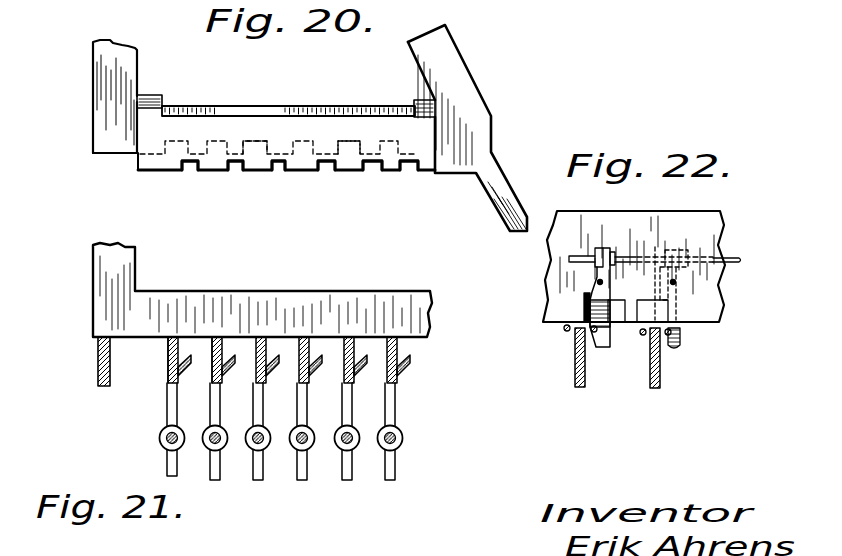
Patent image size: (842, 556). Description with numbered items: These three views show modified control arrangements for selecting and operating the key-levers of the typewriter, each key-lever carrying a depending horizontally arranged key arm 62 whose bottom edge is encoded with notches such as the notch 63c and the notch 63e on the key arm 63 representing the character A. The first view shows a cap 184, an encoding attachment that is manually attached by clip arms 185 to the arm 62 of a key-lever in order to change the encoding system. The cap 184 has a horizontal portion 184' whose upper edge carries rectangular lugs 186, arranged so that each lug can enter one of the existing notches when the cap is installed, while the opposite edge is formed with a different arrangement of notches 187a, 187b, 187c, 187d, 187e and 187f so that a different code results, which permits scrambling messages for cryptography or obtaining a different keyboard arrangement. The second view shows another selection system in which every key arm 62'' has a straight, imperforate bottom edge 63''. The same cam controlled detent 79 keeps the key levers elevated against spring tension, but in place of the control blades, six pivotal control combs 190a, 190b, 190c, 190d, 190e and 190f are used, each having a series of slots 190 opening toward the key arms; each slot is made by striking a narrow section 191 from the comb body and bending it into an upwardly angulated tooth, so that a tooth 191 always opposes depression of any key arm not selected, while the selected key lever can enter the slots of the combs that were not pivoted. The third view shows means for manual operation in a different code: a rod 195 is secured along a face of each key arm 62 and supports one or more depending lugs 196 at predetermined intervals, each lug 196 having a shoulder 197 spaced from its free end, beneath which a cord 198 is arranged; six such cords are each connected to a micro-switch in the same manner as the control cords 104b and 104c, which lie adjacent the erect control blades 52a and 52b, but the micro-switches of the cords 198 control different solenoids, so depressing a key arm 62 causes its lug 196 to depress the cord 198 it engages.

In FIG. 20, the key arm 62 is at (288, 105).
In FIG. 22, the key arm 62 is at (634, 254).
In FIG. 20, the key arm 63 is at (467, 128).
In FIG. 20, the notch 63c is at (262, 141).
In FIG. 20, the notch 63e is at (348, 141).
In FIG. 20, the cap 184 is at (286, 200).
In FIG. 20, the horizontal portion 184' is at (277, 121).
In FIG. 20, the clip arms 185 is at (164, 98).
In FIG. 20, the rectangular lugs 186 is at (212, 140).
In FIG. 20, the notch 187a is at (192, 172).
In FIG. 20, the notch 187b is at (237, 173).
In FIG. 20, the notch 187c is at (287, 173).
In FIG. 20, the notch 187d is at (330, 173).
In FIG. 20, the notch 187e is at (374, 174).
In FIG. 20, the notch 187f is at (411, 174).
In FIG. 21, the key arm 62'' is at (262, 290).
In FIG. 21, the bottom edge 63'' is at (139, 365).
In FIG. 21, the detent 79 is at (97, 365).
In FIG. 21, the slots 190 is at (213, 350).
In FIG. 21, the pivotal control comb 190a is at (167, 415).
In FIG. 21, the pivotal control comb 190b is at (220, 415).
In FIG. 21, the pivotal control comb 190c is at (261, 418).
In FIG. 21, the pivotal control comb 190d is at (305, 417).
In FIG. 21, the pivotal control comb 190e is at (352, 412).
In FIG. 21, the pivotal control comb 190f is at (395, 406).
In FIG. 21, the tooth 191 is at (313, 360).
In FIG. 22, the rod 195 is at (568, 258).
In FIG. 22, the depending lug 196 is at (601, 295).
In FIG. 22, the shoulder 197 is at (676, 347).
In FIG. 22, the cord 198 is at (596, 334).
In FIG. 22, the cord 104b is at (545, 341).
In FIG. 22, the cord 104c is at (642, 335).
In FIG. 22, the control blade 52a is at (575, 366).
In FIG. 22, the control blade 52b is at (650, 373).